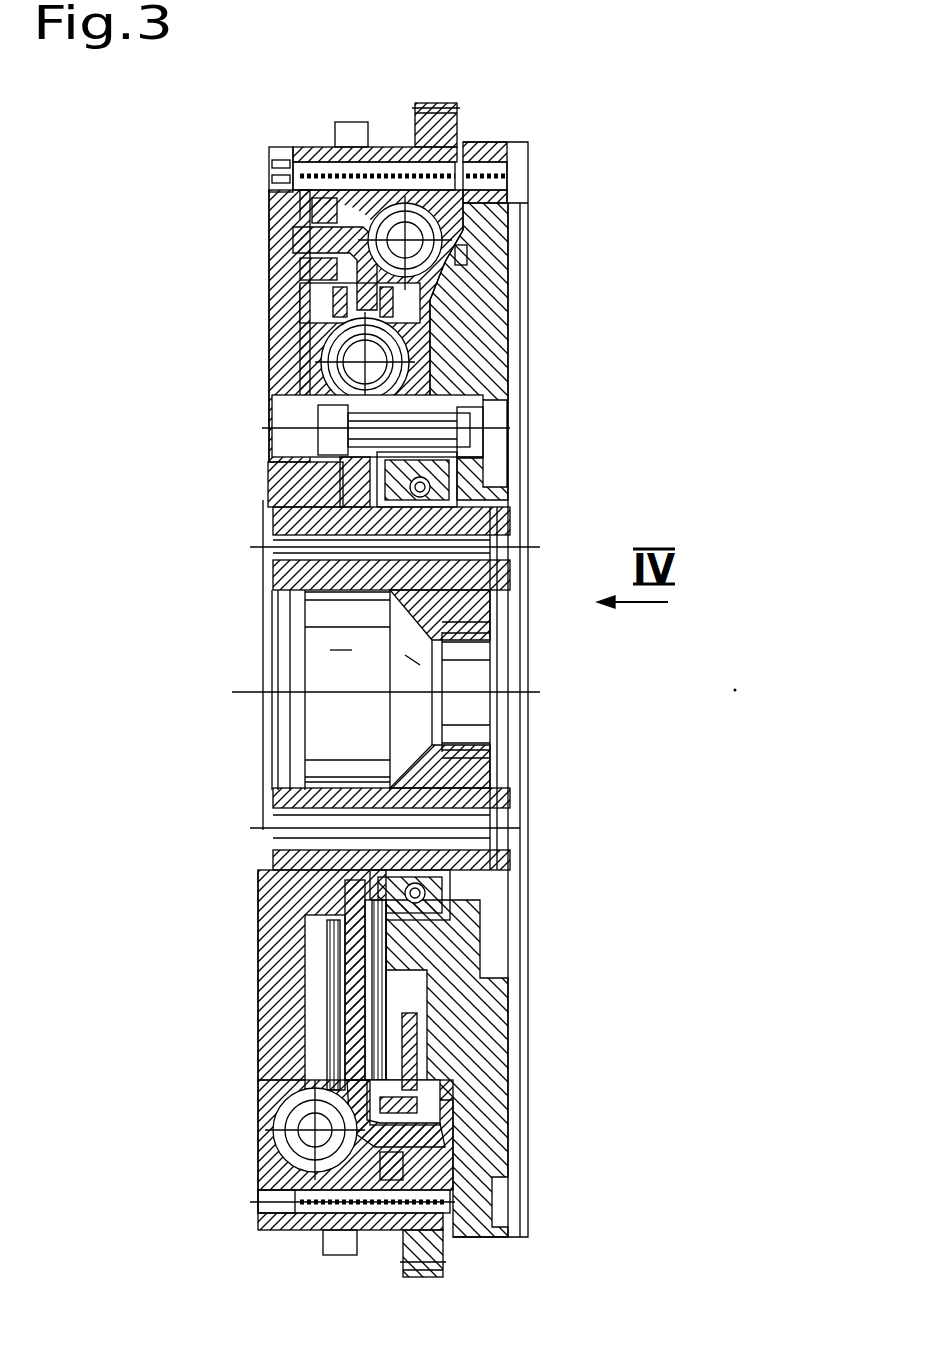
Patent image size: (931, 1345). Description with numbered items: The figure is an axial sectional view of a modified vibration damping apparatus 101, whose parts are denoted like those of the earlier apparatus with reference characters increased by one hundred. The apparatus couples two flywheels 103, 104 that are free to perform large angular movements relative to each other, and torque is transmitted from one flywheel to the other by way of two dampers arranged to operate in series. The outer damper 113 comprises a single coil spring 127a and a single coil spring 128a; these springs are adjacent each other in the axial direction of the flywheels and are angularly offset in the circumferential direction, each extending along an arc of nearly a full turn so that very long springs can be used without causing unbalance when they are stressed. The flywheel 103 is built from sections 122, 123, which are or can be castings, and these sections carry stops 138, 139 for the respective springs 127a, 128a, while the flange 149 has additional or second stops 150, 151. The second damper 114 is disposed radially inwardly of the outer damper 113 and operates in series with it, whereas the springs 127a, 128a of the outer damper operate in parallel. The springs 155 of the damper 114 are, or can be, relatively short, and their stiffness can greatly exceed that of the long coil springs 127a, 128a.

The vibration damping apparatus 101 is at (282, 105).
The flywheel 103 is at (270, 1000).
The flywheel 104 is at (485, 1052).
The outer damper 113 is at (470, 225).
The damper 114 is at (318, 385).
The section of the flywheel 122 is at (270, 350).
The section of the flywheel 123 is at (465, 155).
The coil spring 127a is at (300, 1125).
The coil spring 128a is at (462, 255).
The stop 138 is at (330, 213).
The stop 139 is at (400, 1103).
The flange 149 is at (355, 1003).
The second stop 150 is at (310, 250).
The second stop 151 is at (400, 1140).
The spring 155 is at (430, 400).